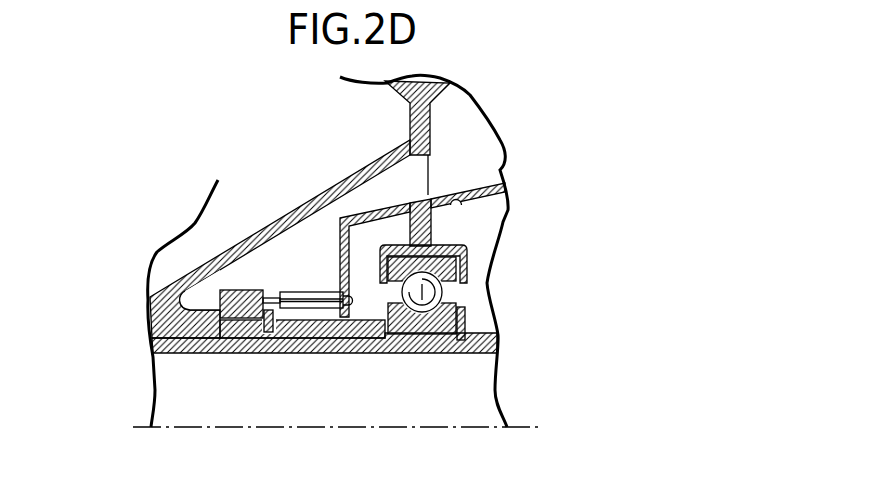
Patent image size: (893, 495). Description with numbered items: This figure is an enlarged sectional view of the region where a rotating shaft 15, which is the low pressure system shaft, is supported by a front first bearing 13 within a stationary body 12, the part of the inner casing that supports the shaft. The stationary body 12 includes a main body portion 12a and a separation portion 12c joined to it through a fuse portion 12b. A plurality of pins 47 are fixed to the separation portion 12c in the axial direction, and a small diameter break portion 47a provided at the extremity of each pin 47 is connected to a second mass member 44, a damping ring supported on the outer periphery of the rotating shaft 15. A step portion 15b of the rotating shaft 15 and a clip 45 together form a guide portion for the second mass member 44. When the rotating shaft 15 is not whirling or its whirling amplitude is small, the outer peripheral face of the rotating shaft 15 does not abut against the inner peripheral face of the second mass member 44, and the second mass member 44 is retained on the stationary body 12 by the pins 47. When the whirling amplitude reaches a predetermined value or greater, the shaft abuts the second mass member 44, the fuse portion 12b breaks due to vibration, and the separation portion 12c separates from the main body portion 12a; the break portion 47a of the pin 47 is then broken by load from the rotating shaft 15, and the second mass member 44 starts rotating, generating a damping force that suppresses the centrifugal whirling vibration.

The stationary body 12 is at (482, 178).
The main body portion 12a is at (503, 167).
The fuse portion 12b is at (452, 200).
The separation portion 12c is at (384, 214).
The front first bearing 13 is at (422, 302).
The rotating shaft 15 is at (477, 323).
The step portion 15b is at (212, 292).
The second mass member 44 is at (240, 302).
The clip 45 is at (273, 314).
The pin 47 is at (313, 288).
The break portion 47a is at (273, 296).